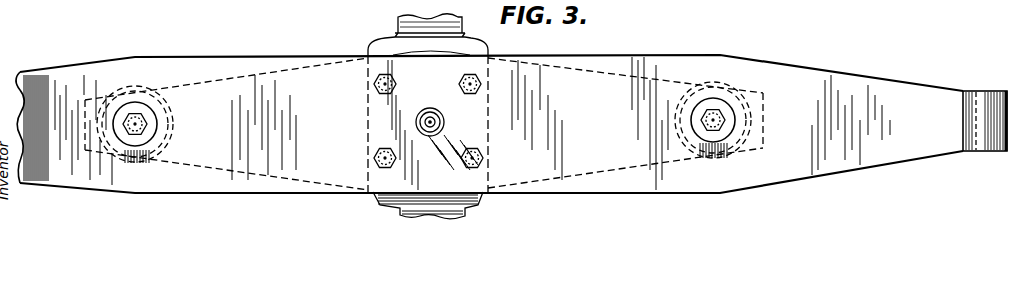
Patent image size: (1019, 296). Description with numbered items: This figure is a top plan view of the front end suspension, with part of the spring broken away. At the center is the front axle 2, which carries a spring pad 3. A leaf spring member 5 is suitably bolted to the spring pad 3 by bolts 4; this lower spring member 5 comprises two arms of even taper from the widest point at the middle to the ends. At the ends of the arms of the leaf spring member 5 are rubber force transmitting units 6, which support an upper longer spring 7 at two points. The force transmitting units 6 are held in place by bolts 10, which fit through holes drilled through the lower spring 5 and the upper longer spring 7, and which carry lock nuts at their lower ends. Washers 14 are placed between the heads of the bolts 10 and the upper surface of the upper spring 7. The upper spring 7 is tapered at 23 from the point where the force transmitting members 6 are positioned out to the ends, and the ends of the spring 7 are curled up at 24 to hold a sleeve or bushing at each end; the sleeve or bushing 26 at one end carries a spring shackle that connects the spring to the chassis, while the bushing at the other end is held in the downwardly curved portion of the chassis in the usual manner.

The front axle 2 is at (403, 30).
The spring pad 3 is at (480, 55).
The bolts 4 is at (372, 152).
The leaf spring member 5 is at (280, 70).
The rubber force transmitting units 6 is at (172, 138).
The upper longer spring 7 is at (212, 62).
The bolts 10 is at (147, 126).
The washers 14 is at (123, 108).
The tapered portion 23 is at (63, 62).
The curled up ends 24 is at (987, 90).
The sleeve or bushing 26 is at (969, 90).